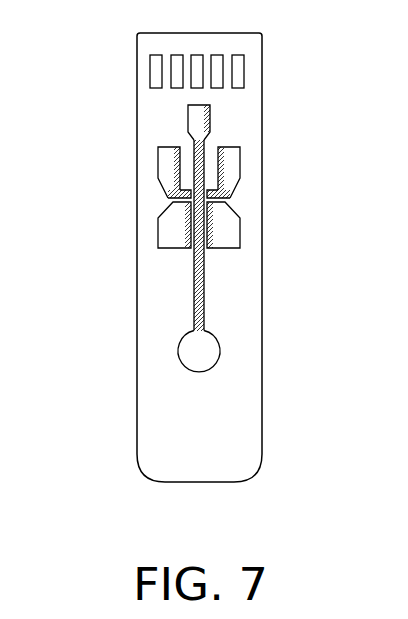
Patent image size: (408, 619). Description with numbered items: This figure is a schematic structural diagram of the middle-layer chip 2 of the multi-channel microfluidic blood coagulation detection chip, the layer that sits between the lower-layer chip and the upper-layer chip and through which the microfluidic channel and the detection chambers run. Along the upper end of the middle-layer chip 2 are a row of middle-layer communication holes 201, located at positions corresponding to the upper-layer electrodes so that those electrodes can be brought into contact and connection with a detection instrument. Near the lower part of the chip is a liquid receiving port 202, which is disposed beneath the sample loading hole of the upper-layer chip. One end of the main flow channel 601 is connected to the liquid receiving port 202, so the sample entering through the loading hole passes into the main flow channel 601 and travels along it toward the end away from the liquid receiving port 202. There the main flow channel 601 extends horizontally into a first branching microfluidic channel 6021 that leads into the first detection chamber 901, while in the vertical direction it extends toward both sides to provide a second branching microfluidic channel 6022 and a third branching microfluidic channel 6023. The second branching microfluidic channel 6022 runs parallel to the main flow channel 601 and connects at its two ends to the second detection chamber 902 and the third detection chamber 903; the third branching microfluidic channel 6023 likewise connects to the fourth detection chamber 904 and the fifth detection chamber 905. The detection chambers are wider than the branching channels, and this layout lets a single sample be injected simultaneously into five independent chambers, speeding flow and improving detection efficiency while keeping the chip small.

The middle-layer chip 2 is at (235, 418).
The middle-layer communication holes 201 is at (218, 70).
The liquid receiving port 202 is at (205, 355).
The main flow channel 601 is at (200, 313).
The first branching microfluidic channel 6021 is at (202, 153).
The second branching microfluidic channel 6022 is at (167, 189).
The third branching microfluidic channel 6023 is at (228, 192).
The first detection chamber 901 is at (198, 115).
The second detection chamber 902 is at (168, 160).
The third detection chamber 903 is at (168, 233).
The fourth detection chamber 904 is at (230, 165).
The fifth detection chamber 905 is at (240, 228).